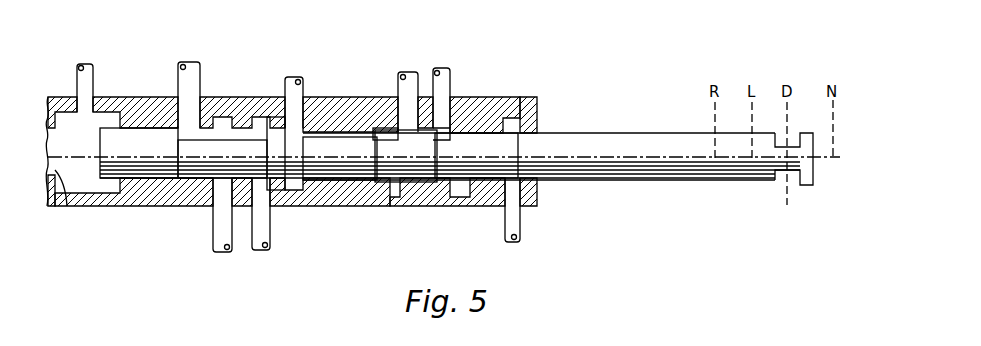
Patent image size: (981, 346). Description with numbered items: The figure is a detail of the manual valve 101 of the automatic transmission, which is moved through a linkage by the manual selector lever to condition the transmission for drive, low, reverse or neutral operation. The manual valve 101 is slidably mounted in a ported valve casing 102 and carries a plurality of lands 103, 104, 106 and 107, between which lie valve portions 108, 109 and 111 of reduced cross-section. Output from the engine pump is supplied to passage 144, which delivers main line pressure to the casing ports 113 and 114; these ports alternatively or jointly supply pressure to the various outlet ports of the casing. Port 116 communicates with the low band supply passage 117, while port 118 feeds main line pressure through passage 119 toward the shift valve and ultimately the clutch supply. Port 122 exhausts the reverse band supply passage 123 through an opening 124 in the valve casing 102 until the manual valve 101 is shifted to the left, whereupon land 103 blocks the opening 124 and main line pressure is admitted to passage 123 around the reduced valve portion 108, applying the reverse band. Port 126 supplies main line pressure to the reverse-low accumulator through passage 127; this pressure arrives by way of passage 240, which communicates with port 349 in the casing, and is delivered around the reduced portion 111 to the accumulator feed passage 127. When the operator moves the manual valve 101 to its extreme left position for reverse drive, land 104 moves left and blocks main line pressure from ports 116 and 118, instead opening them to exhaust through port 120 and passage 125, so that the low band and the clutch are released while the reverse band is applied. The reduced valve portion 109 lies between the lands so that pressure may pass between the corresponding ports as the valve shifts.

The manual valve 101 is at (640, 176).
The valve casing 102 is at (498, 112).
The land 103 is at (143, 178).
The land 104 is at (276, 120).
The land 106 is at (398, 182).
The land 107 is at (572, 147).
The reduced valve portion 108 is at (222, 150).
The reduced valve portion 109 is at (332, 182).
The reduced valve portion 111 is at (462, 180).
The casing port 113 is at (178, 128).
The casing port 114 is at (393, 130).
The port 116 is at (213, 212).
The low band supply passage 117 is at (218, 240).
The port 118 is at (270, 182).
The passage 119 is at (261, 236).
The exhaust port 120 is at (318, 98).
The port 122 is at (132, 108).
The reverse band supply passage 123 is at (84, 66).
The opening 124 is at (67, 206).
The passage 125 is at (294, 80).
The port 126 is at (447, 128).
The passage 127 is at (442, 74).
The passage 144 is at (186, 78).
The passage 240 is at (506, 228).
The port 349 is at (536, 198).